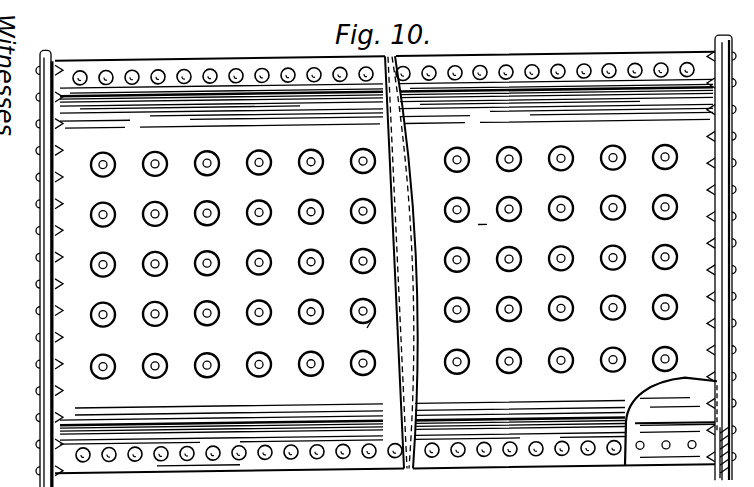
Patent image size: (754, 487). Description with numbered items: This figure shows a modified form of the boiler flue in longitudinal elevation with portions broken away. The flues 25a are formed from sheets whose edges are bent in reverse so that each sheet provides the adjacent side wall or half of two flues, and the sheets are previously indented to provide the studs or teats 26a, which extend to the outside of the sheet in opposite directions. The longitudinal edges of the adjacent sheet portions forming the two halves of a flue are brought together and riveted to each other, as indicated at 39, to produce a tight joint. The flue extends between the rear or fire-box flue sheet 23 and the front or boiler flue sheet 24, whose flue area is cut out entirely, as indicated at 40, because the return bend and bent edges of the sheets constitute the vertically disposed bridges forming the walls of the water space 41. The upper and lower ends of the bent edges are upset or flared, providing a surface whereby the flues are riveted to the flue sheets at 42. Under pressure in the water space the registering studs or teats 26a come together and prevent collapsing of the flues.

The riveted longitudinal edges 39 is at (576, 66).
The front or boiler flue sheet 24 is at (714, 49).
The rivets securing flues to flue sheets 42 is at (42, 381).
The walls of the water space 41 is at (734, 333).
The rear or fire-box flue sheet 23 is at (42, 463).
The flues 25a is at (233, 264).
The studs or teats 26a is at (462, 275).
The cut-out flue area 40 is at (671, 432).